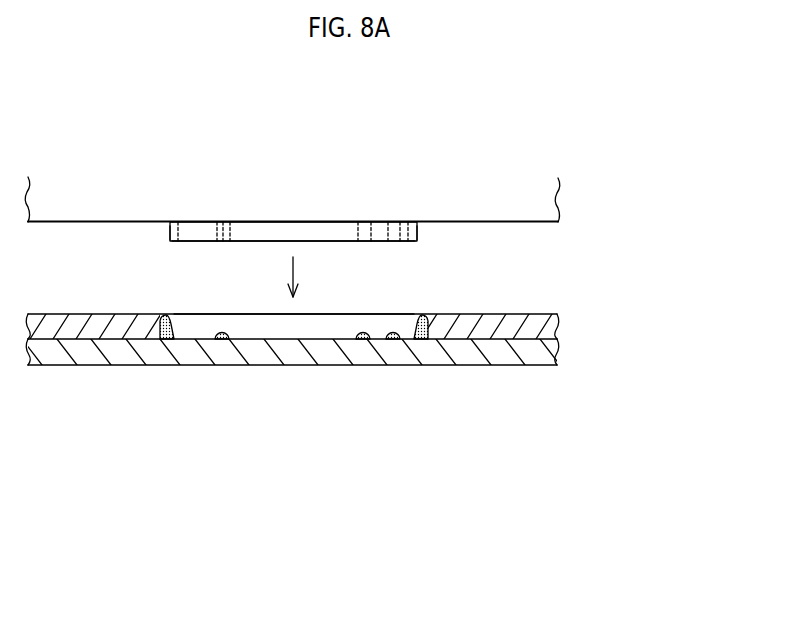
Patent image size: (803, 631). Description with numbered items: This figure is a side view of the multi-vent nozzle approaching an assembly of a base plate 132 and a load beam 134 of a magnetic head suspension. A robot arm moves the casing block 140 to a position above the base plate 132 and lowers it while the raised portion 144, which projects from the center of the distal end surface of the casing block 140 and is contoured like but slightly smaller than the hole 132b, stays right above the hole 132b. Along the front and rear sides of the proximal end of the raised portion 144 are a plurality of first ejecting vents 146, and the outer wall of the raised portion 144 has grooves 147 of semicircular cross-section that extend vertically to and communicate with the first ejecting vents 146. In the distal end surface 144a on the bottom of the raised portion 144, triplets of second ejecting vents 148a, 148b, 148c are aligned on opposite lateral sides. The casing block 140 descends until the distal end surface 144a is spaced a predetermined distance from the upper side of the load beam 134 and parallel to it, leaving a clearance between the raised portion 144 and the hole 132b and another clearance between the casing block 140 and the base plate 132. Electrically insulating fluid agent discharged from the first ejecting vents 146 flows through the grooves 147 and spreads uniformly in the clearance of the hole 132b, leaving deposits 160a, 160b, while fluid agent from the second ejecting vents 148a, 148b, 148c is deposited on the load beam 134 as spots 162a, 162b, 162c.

The casing block 140 is at (582, 203).
The raised portion 144 is at (434, 251).
The distal end surface 144a is at (323, 243).
The first ejecting vents 146 is at (170, 229).
The grooves 147 is at (167, 235).
The second ejecting vent 148a is at (220, 220).
The second ejecting vent 148b is at (363, 220).
The second ejecting vent 148c is at (390, 220).
The base plate 132 is at (549, 328).
The hole 132b is at (281, 325).
The load beam 134 is at (543, 351).
The deposit 160a is at (171, 330).
The deposit 160b is at (414, 328).
The spot 162a is at (222, 341).
The spot 162b is at (364, 341).
The spot 162c is at (396, 341).